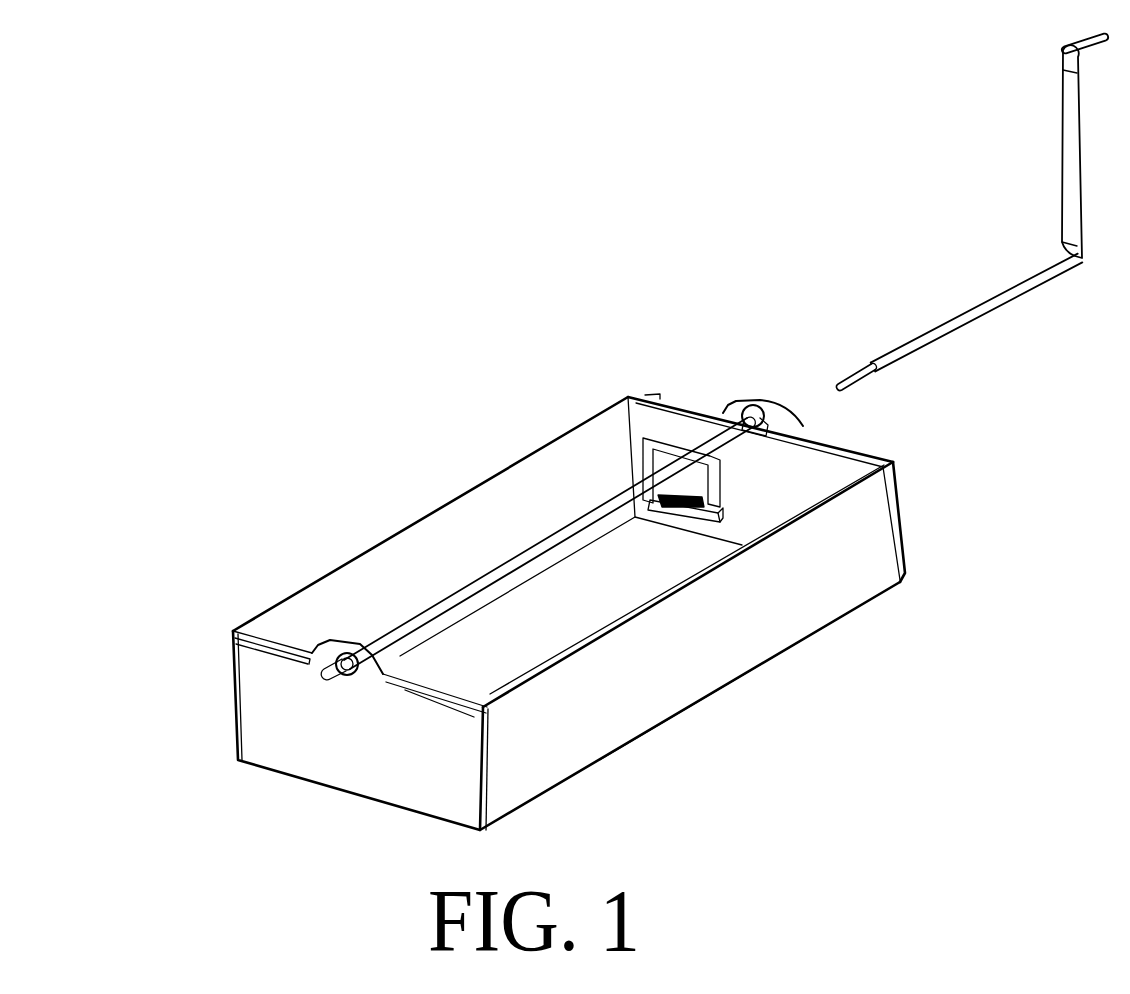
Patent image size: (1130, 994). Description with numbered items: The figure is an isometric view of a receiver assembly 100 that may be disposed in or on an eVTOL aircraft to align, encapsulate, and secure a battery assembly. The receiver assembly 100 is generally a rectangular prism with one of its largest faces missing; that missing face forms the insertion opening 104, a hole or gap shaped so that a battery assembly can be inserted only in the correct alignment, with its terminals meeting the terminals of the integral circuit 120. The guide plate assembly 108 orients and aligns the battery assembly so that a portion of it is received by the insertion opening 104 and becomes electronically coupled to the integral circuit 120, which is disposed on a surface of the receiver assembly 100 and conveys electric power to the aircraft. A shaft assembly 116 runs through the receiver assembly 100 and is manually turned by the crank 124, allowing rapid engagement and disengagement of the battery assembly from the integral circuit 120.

The receiver assembly 100 is at (569, 612).
The insertion opening 104 is at (397, 807).
The guide plate assembly 108 is at (793, 648).
The shaft assembly 116 is at (583, 526).
The integral circuit 120 is at (720, 482).
The crank 124 is at (953, 317).